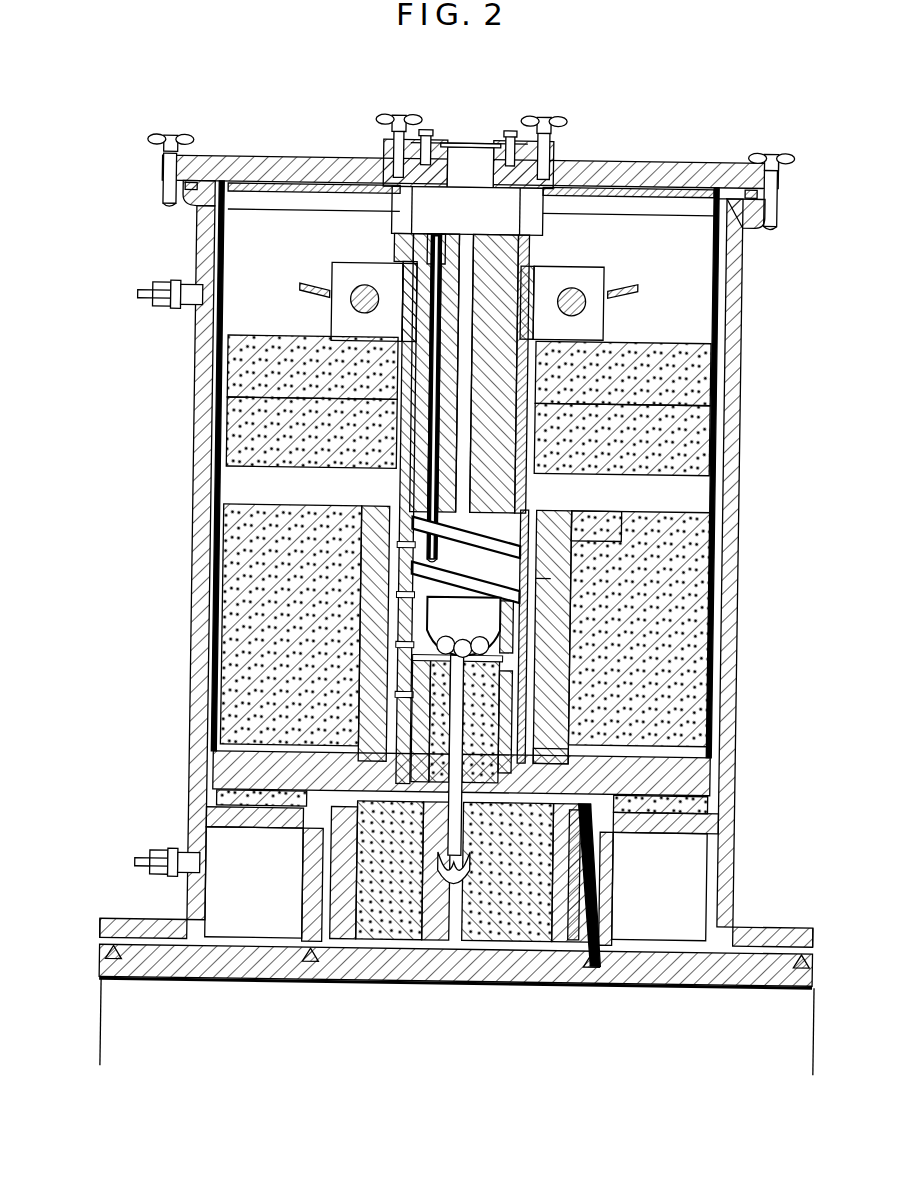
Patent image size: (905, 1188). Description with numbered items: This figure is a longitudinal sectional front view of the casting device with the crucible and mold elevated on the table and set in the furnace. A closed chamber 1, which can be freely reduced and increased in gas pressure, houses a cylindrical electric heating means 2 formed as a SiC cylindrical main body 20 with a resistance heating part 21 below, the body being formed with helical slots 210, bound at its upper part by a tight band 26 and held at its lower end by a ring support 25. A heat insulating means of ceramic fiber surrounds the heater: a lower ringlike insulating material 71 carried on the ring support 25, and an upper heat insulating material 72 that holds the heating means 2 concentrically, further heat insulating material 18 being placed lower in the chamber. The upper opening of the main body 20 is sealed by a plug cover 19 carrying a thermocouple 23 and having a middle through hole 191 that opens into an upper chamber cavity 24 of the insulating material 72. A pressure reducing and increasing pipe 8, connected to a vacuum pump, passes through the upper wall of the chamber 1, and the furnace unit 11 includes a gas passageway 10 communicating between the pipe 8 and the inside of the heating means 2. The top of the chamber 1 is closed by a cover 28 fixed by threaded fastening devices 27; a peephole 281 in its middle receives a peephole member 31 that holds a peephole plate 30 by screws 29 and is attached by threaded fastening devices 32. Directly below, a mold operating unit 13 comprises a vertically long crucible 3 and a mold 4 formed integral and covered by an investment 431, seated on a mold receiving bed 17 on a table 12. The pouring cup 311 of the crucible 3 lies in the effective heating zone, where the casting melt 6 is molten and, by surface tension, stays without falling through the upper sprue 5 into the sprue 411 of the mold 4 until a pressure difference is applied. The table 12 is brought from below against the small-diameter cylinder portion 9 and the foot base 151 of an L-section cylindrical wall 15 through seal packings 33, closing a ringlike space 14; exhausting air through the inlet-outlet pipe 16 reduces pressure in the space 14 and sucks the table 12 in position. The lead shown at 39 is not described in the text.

The closed chamber 1 is at (735, 322).
The cylindrical electric heating means 2 is at (622, 540).
The crucible 3 is at (505, 655).
The mold 4 is at (578, 782).
The upper sprue 5 is at (507, 678).
The casting melt 6 is at (527, 615).
The pressure reducing and increasing pipe 8 is at (203, 300).
The small-diameter cylinder portion 9 is at (312, 872).
The gas passageway 10 is at (298, 222).
The furnace unit 11 is at (190, 650).
The table 12 is at (683, 967).
The mold operating unit 13 is at (98, 1022).
The ringlike space 14 is at (245, 927).
The cylindrical wall 15 is at (200, 820).
The pressure-reducing and pressure-applying inlet-outlet pipe 16 is at (197, 862).
The mold receiving bed 17 is at (440, 953).
The heat insulating material 18 is at (223, 797).
The plug cover 19 is at (553, 340).
The cylindrical main body 20 is at (596, 537).
The resistance heating part 21 is at (545, 577).
The thermocouple 23 is at (440, 313).
The upper chamber cavity 24 is at (265, 195).
The ring support 25 is at (552, 772).
The tight band 26 is at (585, 278).
The threaded fastening devices 27 is at (170, 135).
The cover 28 is at (630, 172).
The screws 29 is at (437, 142).
The peephole plate 30 is at (475, 146).
The peephole member 31 is at (425, 129).
The threaded fastening devices 32 is at (393, 128).
The seal packings 33 is at (127, 973).
The lead wire 39 is at (600, 967).
The ringlike insulating material 71 is at (277, 577).
The heat insulating material 72 is at (243, 433).
The foot base 151 is at (113, 947).
The middle through hole 191 is at (463, 272).
The helical slots 210 is at (408, 376).
The peephole 281 is at (466, 180).
The pouring cup 311 is at (420, 642).
The sprue 411 is at (450, 718).
The investment 431 is at (425, 688).